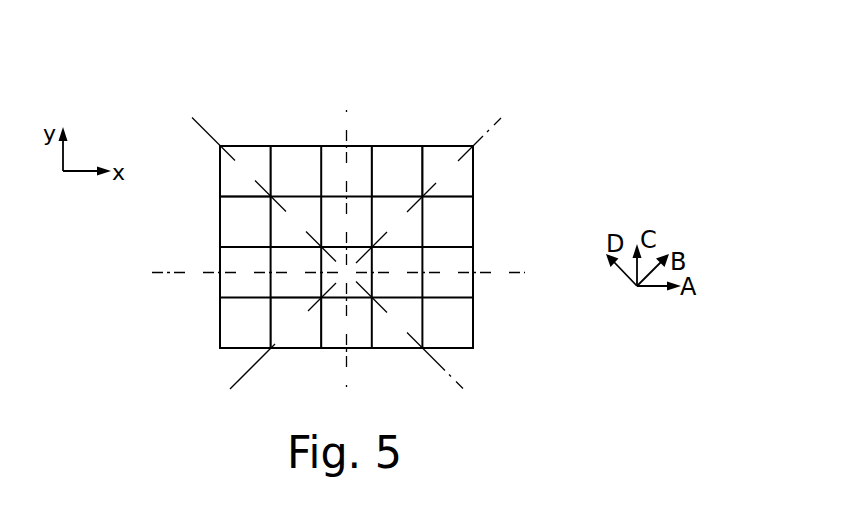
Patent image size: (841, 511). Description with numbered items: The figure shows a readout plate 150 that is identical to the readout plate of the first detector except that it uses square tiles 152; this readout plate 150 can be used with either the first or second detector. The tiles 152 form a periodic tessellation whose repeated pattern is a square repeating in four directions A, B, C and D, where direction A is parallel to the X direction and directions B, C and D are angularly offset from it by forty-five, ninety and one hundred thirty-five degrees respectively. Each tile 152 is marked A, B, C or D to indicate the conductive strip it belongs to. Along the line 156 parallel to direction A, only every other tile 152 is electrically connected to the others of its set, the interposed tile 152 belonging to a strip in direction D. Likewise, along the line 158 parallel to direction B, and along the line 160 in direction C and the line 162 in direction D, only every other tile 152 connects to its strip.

The readout plate 150 is at (502, 65).
The square tiles 152 is at (432, 155).
The line parallel to the first direction A 156 is at (492, 277).
The line parallel to the second direction B 158 is at (483, 139).
The line along the third direction C 160 is at (345, 123).
The line along the fourth direction D 162 is at (210, 132).